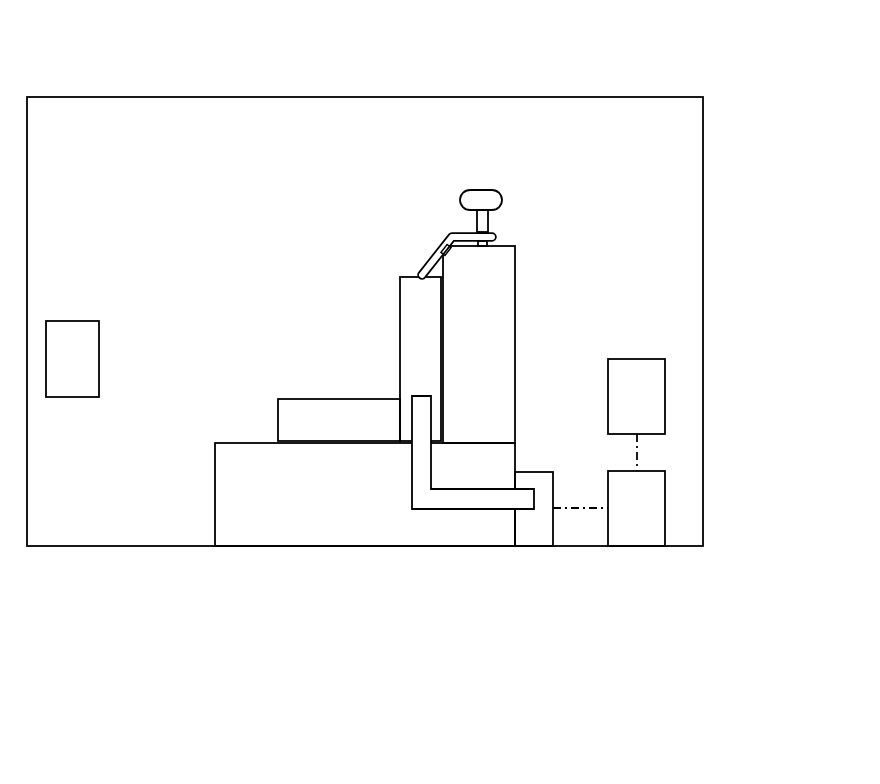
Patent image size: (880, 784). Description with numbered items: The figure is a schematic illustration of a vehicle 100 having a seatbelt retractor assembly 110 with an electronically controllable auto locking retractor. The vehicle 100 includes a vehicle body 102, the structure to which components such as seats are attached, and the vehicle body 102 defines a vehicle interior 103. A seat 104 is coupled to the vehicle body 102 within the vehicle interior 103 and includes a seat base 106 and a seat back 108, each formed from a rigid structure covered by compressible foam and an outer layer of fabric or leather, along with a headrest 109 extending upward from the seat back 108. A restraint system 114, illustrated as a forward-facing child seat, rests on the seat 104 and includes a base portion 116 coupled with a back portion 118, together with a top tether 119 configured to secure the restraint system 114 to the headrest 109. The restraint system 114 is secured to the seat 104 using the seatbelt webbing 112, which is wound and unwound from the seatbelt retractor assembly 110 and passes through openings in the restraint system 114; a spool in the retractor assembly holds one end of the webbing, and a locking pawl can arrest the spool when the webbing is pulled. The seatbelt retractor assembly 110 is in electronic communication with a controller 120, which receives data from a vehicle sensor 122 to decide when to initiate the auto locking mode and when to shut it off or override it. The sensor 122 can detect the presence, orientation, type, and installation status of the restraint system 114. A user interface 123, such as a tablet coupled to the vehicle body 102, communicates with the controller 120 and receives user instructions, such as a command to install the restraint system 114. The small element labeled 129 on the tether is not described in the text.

The vehicle 100 is at (132, 55).
The vehicle body 102 is at (703, 230).
The vehicle interior 103 is at (208, 200).
The seat 104 is at (472, 213).
The seat base 106 is at (340, 548).
The seat back 108 is at (516, 293).
The headrest 109 is at (515, 230).
The seatbelt retractor assembly 110 is at (537, 548).
The seatbelt webbing 112 is at (480, 509).
The restraint system 114 is at (262, 362).
The base portion 116 is at (285, 398).
The back portion 118 is at (400, 320).
The top tether 119 is at (428, 265).
The controller 120 is at (665, 510).
The vehicle sensor 122 is at (665, 397).
The user interface 123 is at (77, 397).
The pivot 129 is at (440, 249).